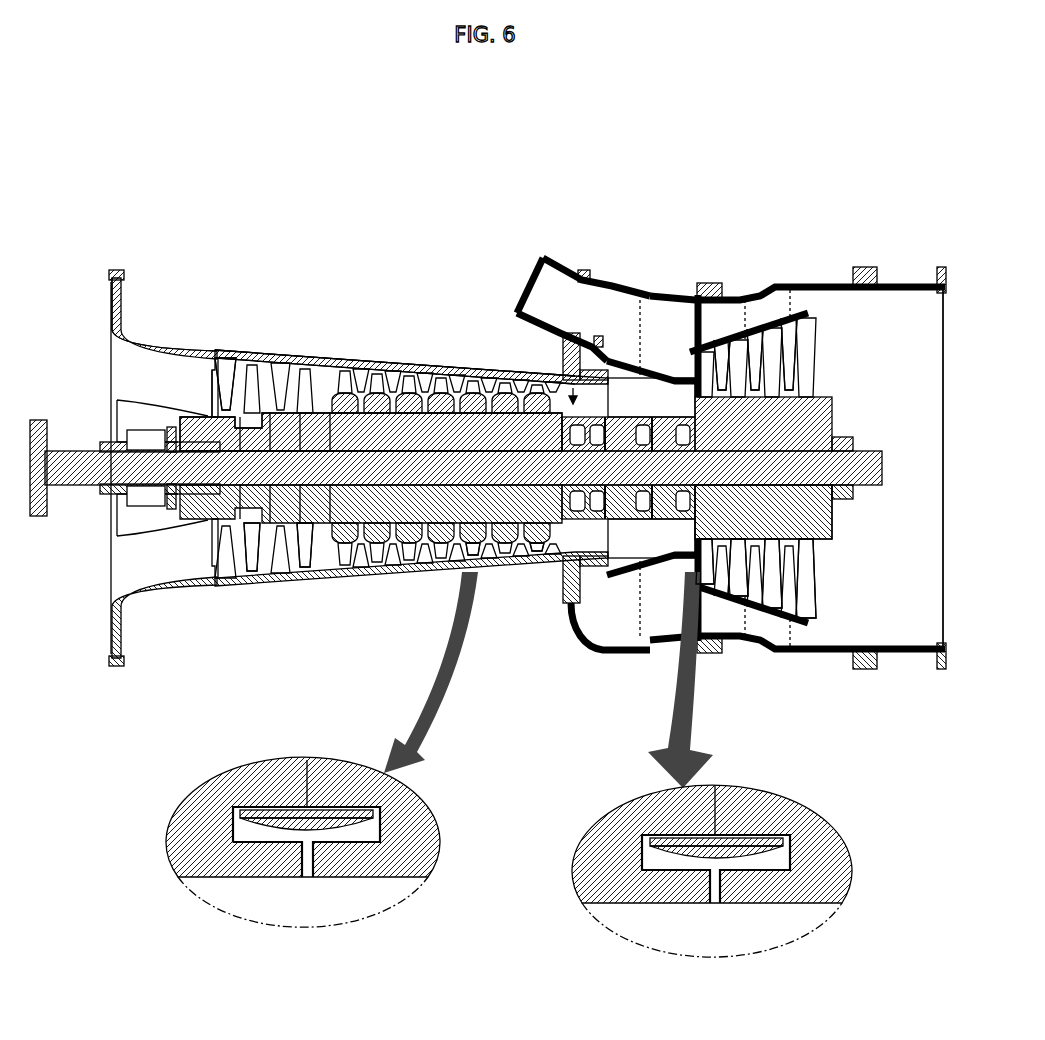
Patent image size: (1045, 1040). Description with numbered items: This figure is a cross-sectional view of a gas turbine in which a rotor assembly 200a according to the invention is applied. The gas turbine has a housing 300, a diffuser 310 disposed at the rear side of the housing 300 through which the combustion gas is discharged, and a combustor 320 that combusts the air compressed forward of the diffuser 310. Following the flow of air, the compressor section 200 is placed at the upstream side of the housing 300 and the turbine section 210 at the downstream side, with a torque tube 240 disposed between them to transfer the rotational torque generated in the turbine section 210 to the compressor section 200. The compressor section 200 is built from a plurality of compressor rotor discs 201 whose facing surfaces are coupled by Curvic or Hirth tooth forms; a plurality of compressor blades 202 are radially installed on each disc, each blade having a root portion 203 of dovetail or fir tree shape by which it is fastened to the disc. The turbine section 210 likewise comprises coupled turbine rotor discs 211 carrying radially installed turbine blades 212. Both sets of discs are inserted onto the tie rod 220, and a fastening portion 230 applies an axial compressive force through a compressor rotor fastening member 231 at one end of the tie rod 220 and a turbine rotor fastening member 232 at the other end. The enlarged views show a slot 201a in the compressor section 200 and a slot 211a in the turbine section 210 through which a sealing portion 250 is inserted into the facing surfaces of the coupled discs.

The fastening portion 230 is at (857, 152).
The compressor rotor fastening member 231 is at (170, 458).
The turbine rotor fastening member 232 is at (838, 440).
The diffuser 310 is at (905, 285).
The turbine blade 212 is at (808, 330).
The torque tube 240 is at (545, 312).
The tie rod 220 is at (590, 345).
The combustor 320 is at (582, 275).
The rotor assembly 200a is at (565, 375).
The housing 300 is at (330, 360).
The root portion 203 is at (220, 418).
The compressor blade 202 is at (230, 365).
The compressor rotor disc 201 is at (543, 545).
The compressor section 200 is at (553, 668).
The turbine rotor disc 211 is at (815, 560).
The turbine section 210 is at (727, 727).
The slot 201a is at (378, 828).
The sealing portion 250 is at (247, 800).
The slot 211a is at (652, 872).